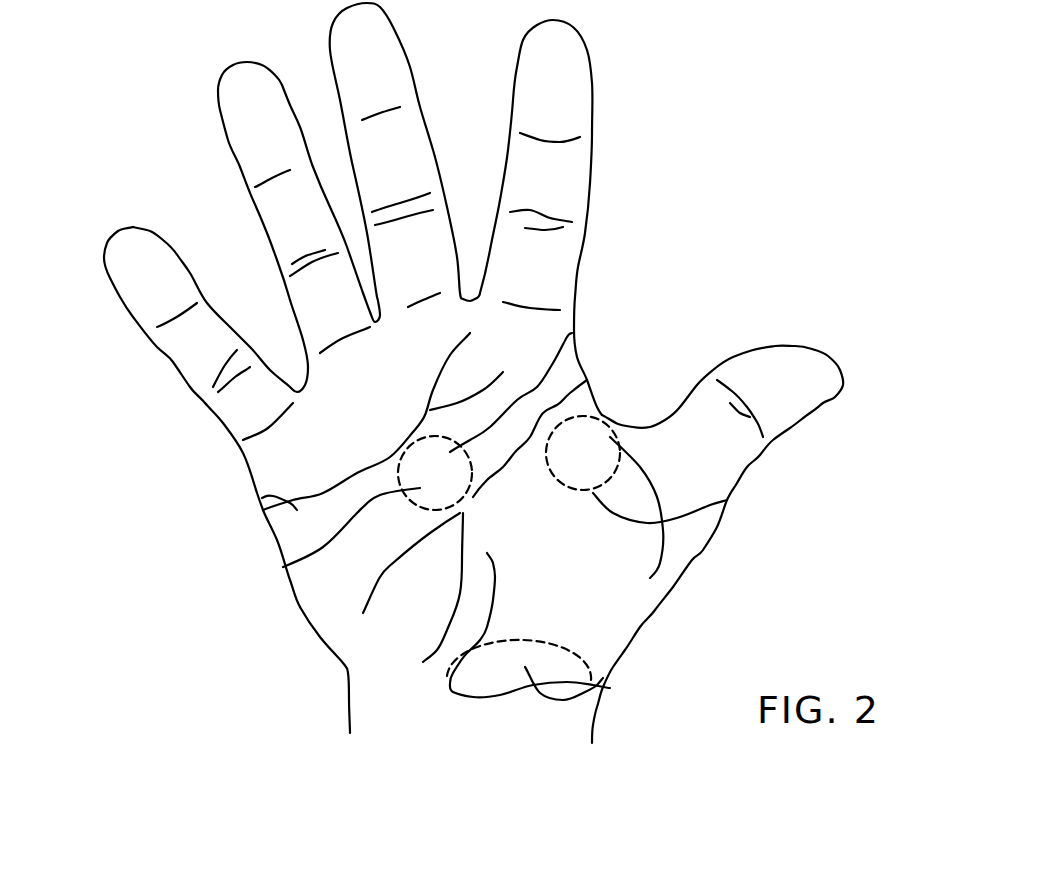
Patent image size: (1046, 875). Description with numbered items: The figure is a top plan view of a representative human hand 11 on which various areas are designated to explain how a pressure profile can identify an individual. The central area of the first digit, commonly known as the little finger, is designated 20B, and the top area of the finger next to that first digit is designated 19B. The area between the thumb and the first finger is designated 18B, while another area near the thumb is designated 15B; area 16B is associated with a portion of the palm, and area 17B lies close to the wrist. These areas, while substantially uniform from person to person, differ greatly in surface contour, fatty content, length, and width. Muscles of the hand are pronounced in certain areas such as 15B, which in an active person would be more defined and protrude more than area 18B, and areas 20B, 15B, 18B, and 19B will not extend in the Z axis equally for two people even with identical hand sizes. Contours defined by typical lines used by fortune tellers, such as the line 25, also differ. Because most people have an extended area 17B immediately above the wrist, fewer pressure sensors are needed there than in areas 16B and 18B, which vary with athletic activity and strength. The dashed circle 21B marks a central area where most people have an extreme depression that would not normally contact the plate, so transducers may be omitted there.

The hand 11 is at (823, 382).
The area near the thumb 15B is at (727, 500).
The palm area 16B is at (310, 582).
The wrist area 17B is at (597, 688).
The area between the thumb and the first finger 18B is at (588, 443).
The top area of the finger next to the first digit 19B is at (228, 115).
The central area of the little finger 20B is at (173, 360).
The central area of the hand 21B is at (300, 562).
The line of the hand 25 is at (262, 498).